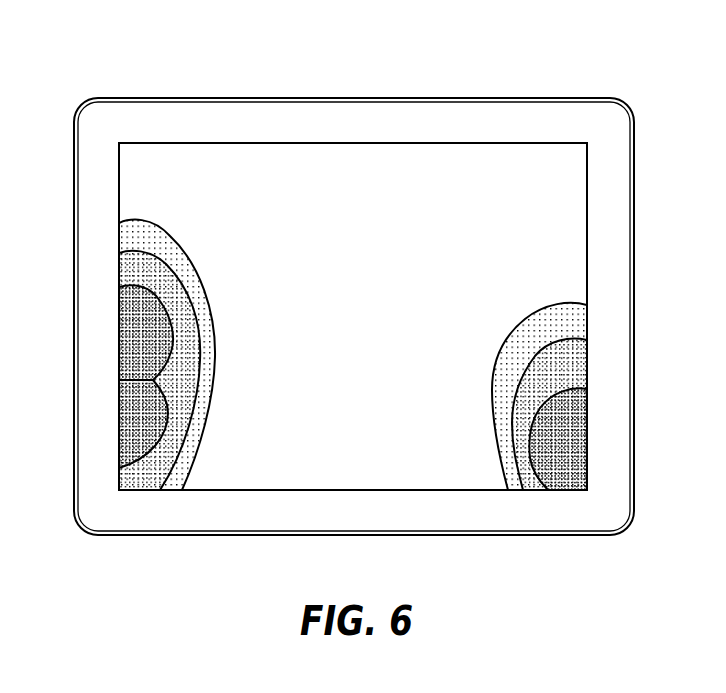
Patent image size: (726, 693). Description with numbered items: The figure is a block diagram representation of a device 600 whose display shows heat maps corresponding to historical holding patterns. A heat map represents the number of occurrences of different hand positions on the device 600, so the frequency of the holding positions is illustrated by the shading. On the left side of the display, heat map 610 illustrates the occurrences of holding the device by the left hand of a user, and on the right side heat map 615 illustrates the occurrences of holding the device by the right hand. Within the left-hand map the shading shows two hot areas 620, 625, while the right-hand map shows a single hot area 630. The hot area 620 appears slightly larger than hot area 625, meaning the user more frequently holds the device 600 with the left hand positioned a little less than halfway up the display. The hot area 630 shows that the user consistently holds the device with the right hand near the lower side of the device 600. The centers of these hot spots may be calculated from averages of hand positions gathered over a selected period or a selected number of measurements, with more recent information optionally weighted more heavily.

The device 600 is at (540, 70).
The heat map 610 is at (216, 363).
The heat map 615 is at (492, 390).
The hot area 620 is at (132, 335).
The hot area 625 is at (133, 416).
The hot area 630 is at (571, 440).